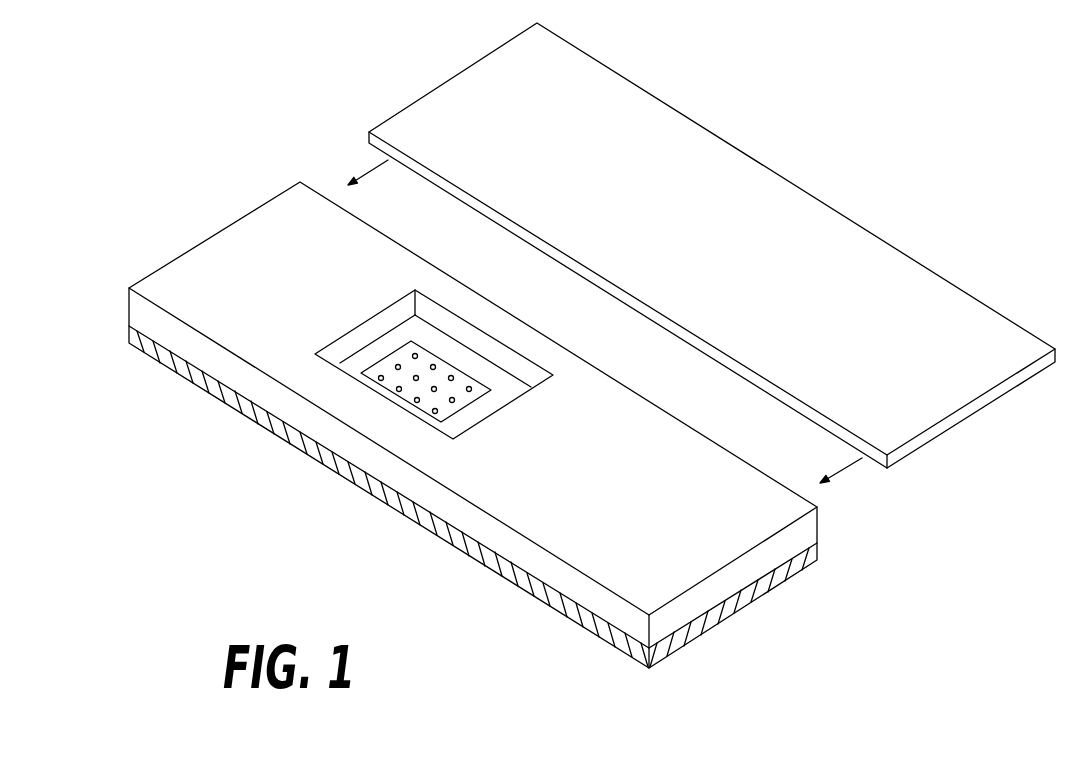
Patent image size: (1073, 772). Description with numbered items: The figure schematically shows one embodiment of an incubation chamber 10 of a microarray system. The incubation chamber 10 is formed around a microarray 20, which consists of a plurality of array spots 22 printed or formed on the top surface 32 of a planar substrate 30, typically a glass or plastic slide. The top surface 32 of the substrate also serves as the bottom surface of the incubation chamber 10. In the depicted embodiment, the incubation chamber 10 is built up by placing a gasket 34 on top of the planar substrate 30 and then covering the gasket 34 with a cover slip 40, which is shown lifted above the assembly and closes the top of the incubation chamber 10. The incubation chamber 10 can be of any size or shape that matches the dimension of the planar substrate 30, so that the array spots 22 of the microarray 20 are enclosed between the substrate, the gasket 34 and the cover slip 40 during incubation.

The incubation chamber 10 is at (473, 429).
The microarray 20 is at (357, 437).
The array spots 22 is at (431, 410).
The planar substrate 30 is at (585, 625).
The top surface 32 is at (499, 400).
The gasket 34 is at (737, 577).
The cover slip 40 is at (910, 448).